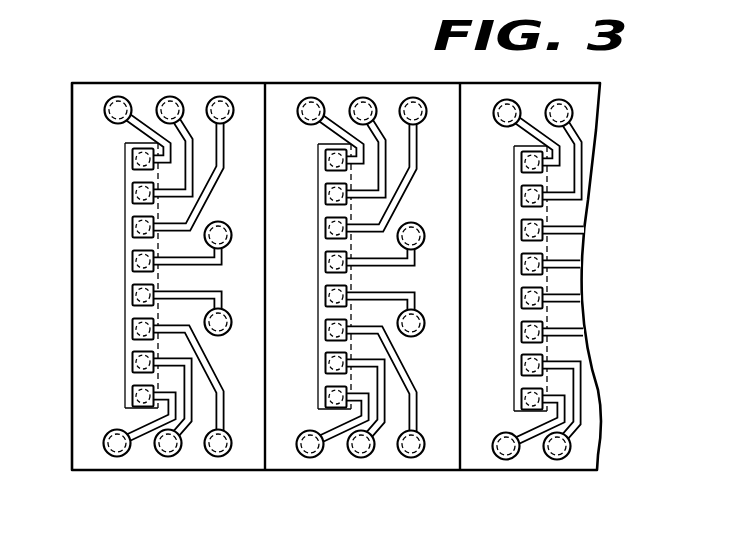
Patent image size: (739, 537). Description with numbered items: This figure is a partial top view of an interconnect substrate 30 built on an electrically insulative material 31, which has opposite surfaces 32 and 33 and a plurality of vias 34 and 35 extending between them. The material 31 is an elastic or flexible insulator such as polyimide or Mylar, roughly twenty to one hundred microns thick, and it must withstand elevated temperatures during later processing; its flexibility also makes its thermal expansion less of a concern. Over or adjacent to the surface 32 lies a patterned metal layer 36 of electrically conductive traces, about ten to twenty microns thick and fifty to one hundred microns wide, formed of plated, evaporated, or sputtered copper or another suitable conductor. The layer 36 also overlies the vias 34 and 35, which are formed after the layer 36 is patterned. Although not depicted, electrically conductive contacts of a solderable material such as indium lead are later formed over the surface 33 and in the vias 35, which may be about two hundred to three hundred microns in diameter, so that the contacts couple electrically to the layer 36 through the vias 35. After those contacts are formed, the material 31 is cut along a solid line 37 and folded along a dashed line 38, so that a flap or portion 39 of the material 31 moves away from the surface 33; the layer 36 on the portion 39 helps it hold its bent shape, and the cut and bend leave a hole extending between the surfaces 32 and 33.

The interconnect substrate 30 is at (250, 56).
The electrically insulative material 31 is at (71, 155).
The surface 32 is at (166, 281).
The surface 33 is at (137, 487).
The vias 34 is at (212, 98).
The vias 35 is at (128, 268).
The patterned metal layer 36 is at (136, 116).
The solid line 37 is at (125, 213).
The dashed line 38 is at (151, 382).
The portion 39 is at (127, 313).